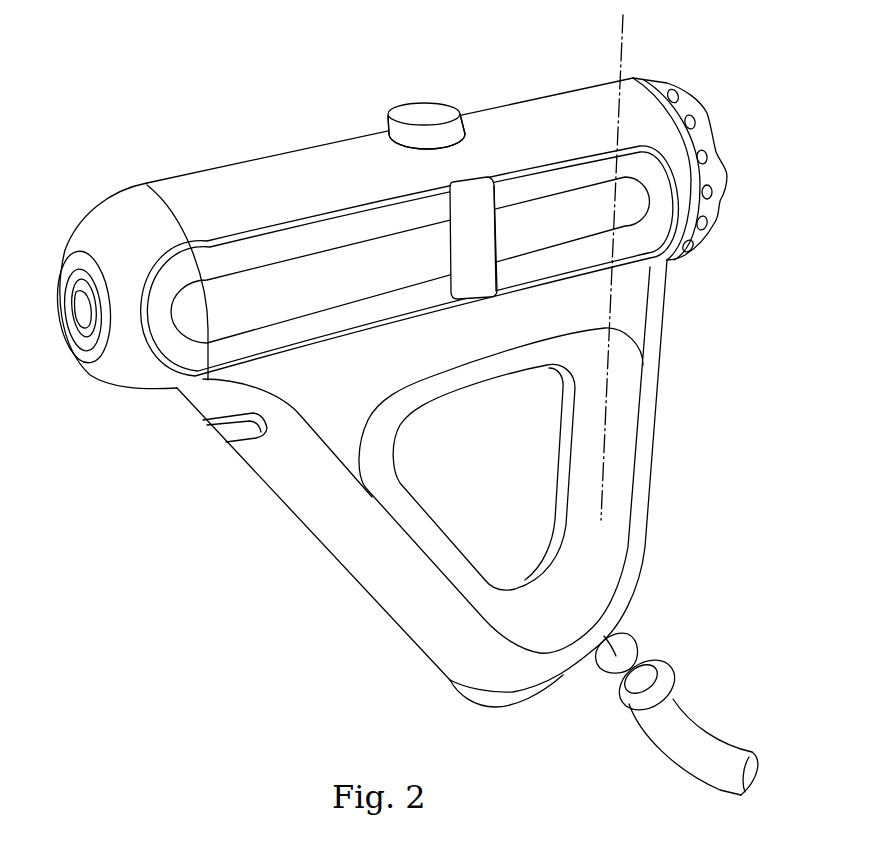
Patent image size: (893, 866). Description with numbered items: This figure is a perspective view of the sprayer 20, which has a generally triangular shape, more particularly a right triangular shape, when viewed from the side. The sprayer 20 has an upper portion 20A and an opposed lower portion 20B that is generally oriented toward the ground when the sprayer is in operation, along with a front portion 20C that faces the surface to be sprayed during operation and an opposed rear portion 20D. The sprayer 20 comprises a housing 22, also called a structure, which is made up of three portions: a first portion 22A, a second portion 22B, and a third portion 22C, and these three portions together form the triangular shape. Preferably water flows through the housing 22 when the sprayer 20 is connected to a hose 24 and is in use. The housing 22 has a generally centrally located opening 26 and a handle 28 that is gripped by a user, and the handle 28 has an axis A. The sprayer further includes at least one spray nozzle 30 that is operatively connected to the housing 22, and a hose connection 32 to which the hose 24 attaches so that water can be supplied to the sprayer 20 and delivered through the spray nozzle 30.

The sprayer 20 is at (262, 138).
The upper portion 20A is at (503, 96).
The lower portion 20B is at (527, 724).
The front portion 20C is at (230, 492).
The rear portion 20D is at (686, 295).
The housing 22 is at (372, 165).
The first portion 22A is at (577, 141).
The second portion 22B is at (622, 418).
The third portion 22C is at (323, 510).
The hose 24 is at (677, 690).
The opening 26 is at (470, 526).
The handle 28 is at (597, 482).
The spray nozzle 30 is at (58, 322).
The hose connection 32 is at (628, 634).
The axis A is at (623, 42).